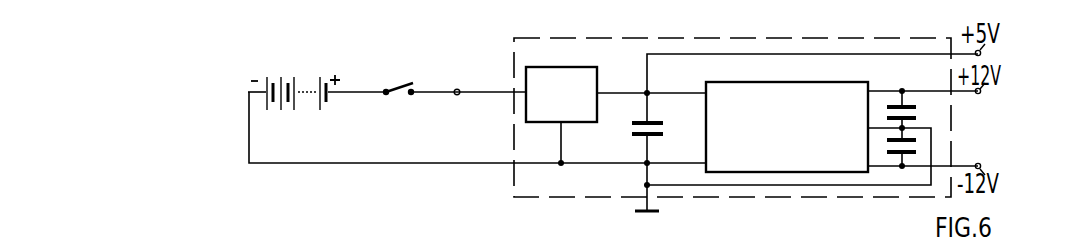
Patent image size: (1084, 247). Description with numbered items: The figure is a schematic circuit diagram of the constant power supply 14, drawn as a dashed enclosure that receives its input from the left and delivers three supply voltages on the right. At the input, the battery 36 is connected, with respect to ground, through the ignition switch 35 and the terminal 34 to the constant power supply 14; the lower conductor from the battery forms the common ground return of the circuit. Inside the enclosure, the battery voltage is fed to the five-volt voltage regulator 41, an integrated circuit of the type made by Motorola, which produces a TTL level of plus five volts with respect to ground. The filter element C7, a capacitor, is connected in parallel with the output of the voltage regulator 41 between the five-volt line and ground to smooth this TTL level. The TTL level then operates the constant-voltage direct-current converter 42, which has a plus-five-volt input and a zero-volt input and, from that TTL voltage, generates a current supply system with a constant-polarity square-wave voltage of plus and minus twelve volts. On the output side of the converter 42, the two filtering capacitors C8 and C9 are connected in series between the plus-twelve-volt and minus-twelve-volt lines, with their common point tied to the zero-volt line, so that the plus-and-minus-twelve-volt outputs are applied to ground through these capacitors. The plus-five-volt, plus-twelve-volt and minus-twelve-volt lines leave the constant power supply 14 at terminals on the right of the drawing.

The constant power supply 14 is at (560, 197).
The terminal 34 is at (470, 69).
The ignition switch 35 is at (390, 88).
The battery 36 is at (312, 70).
The 5-volt voltage regulator 41 is at (586, 50).
The constant-voltage direct-current converter 42 is at (774, 64).
The filter element C7 is at (655, 118).
The filtering capacitor C8 is at (917, 107).
The filtering capacitor C9 is at (916, 140).